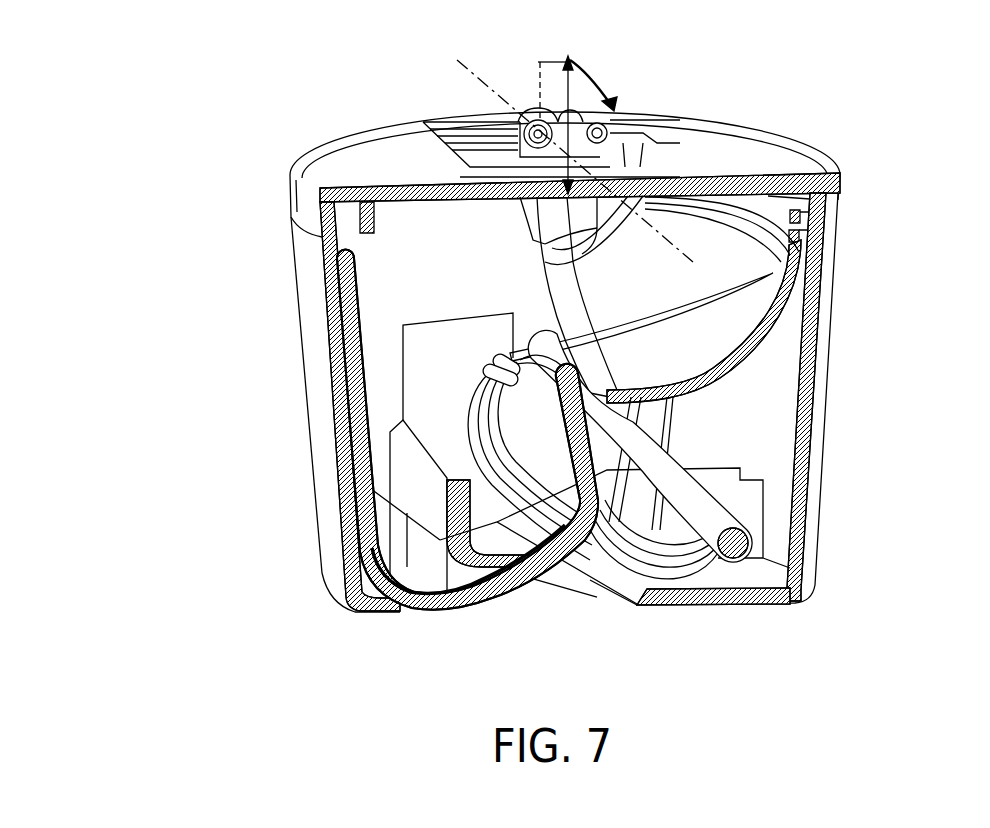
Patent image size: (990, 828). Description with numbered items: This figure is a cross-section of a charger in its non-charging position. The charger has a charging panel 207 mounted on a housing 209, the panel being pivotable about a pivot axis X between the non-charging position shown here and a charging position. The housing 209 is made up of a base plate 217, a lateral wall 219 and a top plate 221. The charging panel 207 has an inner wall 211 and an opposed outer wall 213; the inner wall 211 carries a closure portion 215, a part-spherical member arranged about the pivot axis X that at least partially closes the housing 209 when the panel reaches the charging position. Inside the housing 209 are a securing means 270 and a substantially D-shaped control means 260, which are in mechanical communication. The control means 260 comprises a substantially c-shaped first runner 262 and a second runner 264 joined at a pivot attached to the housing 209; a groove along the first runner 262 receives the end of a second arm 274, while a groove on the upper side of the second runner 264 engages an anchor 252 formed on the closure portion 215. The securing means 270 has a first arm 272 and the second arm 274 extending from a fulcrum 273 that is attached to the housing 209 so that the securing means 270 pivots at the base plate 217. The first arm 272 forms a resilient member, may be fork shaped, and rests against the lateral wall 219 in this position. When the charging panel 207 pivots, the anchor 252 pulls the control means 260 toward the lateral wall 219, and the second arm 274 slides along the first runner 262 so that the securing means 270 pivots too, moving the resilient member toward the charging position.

The charging panel 207 is at (743, 177).
The housing 209 is at (556, 358).
The inner wall 211 is at (540, 260).
The outer wall 213 is at (508, 162).
The closure portion 215 is at (797, 273).
The base plate 217 is at (675, 595).
The lateral wall 219 is at (316, 490).
The top plate 221 is at (292, 187).
The anchor 252 is at (478, 364).
The control means 260 is at (686, 448).
The first runner 262 is at (682, 573).
The second runner 264 is at (705, 506).
The securing means 270 is at (357, 563).
The first arm 272 is at (384, 578).
The fulcrum 273 is at (483, 593).
The second arm 274 is at (522, 562).